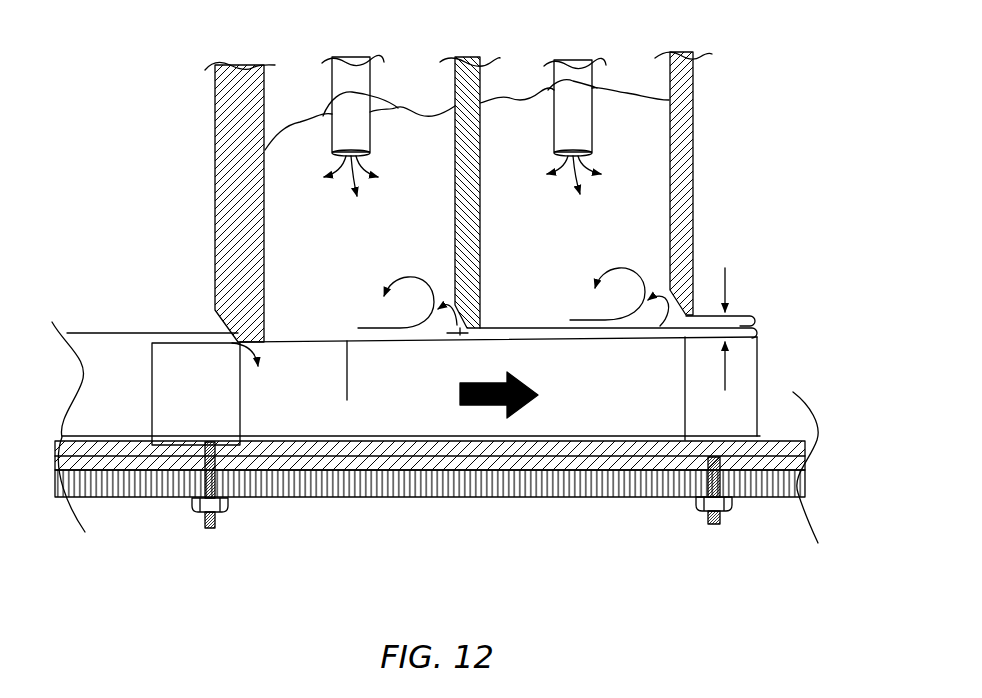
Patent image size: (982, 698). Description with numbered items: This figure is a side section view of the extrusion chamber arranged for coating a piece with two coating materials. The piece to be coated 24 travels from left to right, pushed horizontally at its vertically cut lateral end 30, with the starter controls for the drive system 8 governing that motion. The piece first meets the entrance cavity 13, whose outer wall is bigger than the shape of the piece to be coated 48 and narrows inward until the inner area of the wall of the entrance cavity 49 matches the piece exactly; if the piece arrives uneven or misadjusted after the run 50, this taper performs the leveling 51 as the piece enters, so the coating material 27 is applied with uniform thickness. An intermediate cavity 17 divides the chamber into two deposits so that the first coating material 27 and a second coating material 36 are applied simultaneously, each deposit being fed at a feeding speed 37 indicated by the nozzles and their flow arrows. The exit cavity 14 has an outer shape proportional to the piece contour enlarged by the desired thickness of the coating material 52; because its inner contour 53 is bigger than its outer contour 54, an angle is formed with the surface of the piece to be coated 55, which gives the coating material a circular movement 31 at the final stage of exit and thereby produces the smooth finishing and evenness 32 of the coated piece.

The starter controls for the drive system 8 is at (488, 404).
The entrance cavity 13 is at (233, 168).
The exit cavity 14 is at (680, 162).
The intermediate cavity 17 is at (460, 58).
The piece to be coated 24 is at (590, 404).
The coating material 27 is at (408, 226).
The lateral end of the piece 30 is at (463, 341).
The circular movement of the coating material 31 is at (402, 275).
The smooth finishing and evenness 32 is at (757, 357).
The second coating material 36 is at (508, 226).
The feeding speed 37 is at (372, 168).
The shape of the piece to be coated 48 is at (347, 400).
The inner area of the wall of the entrance cavity 49 is at (265, 333).
The uneven or misadjusted run 50 is at (148, 333).
The leveling adjustment 51 is at (232, 343).
The desired thickness of the coating material 52 is at (725, 266).
The inner contour of the exit cavity 53 is at (668, 300).
The outer contour of the exit cavity 54 is at (680, 230).
The surface of the piece to be coated 55 is at (685, 440).